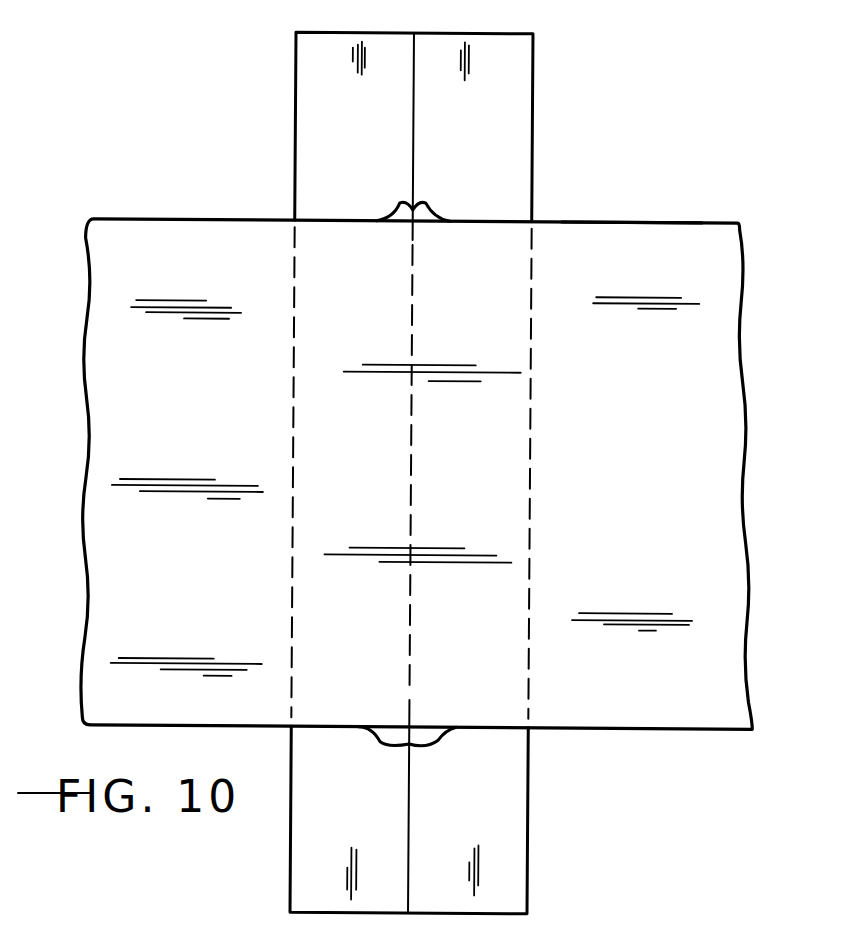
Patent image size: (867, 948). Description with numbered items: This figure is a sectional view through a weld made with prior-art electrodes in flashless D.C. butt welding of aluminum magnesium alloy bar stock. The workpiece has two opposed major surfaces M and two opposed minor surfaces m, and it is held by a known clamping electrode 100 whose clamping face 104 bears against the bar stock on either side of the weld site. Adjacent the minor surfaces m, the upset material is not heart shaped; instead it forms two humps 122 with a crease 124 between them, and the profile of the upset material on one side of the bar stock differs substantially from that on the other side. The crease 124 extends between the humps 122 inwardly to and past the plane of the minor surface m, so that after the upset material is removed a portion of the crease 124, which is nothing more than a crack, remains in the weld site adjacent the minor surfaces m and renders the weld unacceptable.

The clamping electrode 100 is at (323, 31).
The clamping face 104 is at (392, 123).
The humps 122 is at (438, 797).
The crease 124 is at (411, 228).
The minor surfaces m is at (592, 221).
The major surfaces M is at (655, 484).